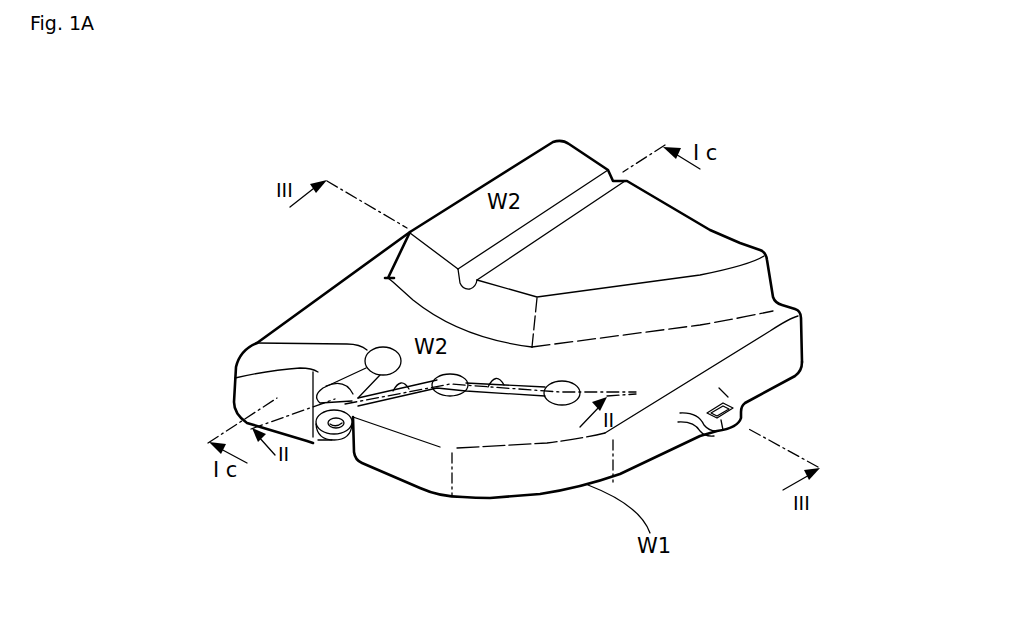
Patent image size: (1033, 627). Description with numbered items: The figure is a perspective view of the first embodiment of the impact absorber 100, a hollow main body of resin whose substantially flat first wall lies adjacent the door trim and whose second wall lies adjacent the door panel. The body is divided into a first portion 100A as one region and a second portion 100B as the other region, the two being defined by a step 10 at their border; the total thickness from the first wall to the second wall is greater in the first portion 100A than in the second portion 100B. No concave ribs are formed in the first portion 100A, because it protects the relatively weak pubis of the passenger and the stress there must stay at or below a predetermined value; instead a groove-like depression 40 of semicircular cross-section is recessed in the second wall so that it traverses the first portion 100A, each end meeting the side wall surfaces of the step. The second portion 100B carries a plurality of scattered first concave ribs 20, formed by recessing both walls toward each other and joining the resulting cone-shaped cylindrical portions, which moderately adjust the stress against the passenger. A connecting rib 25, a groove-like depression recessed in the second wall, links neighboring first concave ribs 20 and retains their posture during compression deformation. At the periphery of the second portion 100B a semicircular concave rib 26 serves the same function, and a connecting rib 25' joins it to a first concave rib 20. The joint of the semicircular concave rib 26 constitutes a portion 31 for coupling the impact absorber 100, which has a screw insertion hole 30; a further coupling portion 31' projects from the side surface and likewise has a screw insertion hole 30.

The impact absorber 100 is at (397, 190).
The first portion 100A is at (623, 247).
The second portion 100B is at (310, 333).
The step 10 is at (410, 262).
The groove-like depression 40 is at (588, 188).
The first concave rib 20 is at (255, 342).
The connecting rib 25 is at (480, 460).
The connecting rib 25' is at (288, 451).
The semicircular concave rib 26 is at (340, 442).
The portion for coupling the impact absorber 31 is at (303, 489).
The screw insertion hole 30 is at (721, 418).
The portion for coupling the impact absorber 31' is at (726, 477).